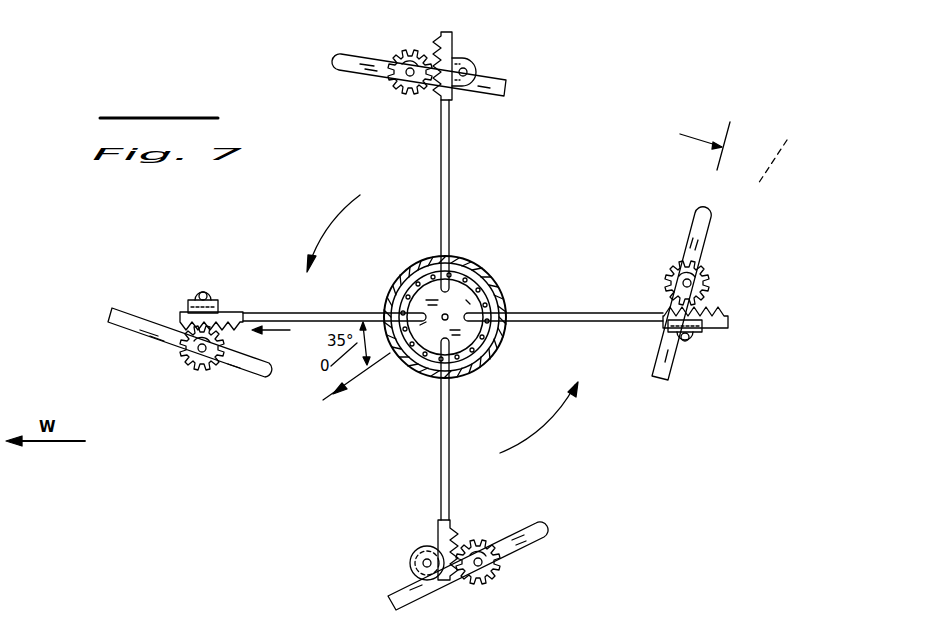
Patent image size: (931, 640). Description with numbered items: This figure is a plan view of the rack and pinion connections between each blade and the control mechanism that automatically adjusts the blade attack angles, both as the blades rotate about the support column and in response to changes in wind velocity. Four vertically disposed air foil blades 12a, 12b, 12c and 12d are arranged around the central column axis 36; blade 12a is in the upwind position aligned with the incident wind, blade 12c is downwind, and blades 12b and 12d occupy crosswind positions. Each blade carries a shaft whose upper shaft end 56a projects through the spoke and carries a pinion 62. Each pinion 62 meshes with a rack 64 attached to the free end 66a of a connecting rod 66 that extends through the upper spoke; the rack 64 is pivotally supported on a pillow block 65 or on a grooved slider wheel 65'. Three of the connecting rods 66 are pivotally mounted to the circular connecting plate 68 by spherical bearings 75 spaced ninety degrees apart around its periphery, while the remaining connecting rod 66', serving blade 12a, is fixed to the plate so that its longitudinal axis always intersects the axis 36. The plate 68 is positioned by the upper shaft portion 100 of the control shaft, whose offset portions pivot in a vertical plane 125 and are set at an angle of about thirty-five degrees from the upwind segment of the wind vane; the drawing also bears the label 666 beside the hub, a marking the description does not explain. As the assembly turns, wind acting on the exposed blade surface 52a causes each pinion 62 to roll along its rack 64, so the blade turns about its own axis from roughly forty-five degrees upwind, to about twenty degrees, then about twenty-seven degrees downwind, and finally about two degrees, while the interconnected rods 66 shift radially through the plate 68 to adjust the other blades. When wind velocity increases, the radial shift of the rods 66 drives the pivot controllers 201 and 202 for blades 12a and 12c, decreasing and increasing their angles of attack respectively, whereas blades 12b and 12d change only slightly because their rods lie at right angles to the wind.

The air foil blade 12a is at (120, 323).
The air foil blade 12b is at (515, 556).
The air foil blade 12c is at (703, 226).
The air foil blade 12d is at (363, 58).
The column axis 36 is at (454, 347).
The blade surface 52a is at (240, 368).
The upper shaft end 56a is at (706, 283).
The pinion 62 is at (190, 363).
The rack 64 is at (180, 318).
The pillow block 65 is at (463, 204).
The slider wheel 65' is at (399, 565).
The connecting rod 66 is at (453, 310).
The connecting rod 66' is at (549, 343).
The free end of connecting rod 66a is at (660, 312).
The circular connecting plate 68 is at (430, 372).
The spherical bearing 75 is at (429, 268).
The upper shaft portion 100 is at (428, 342).
The vertical plane 125 is at (391, 356).
The pivot controller 201 is at (176, 322).
The pivot controller 202 is at (735, 321).
The bearing race 666 is at (467, 317).